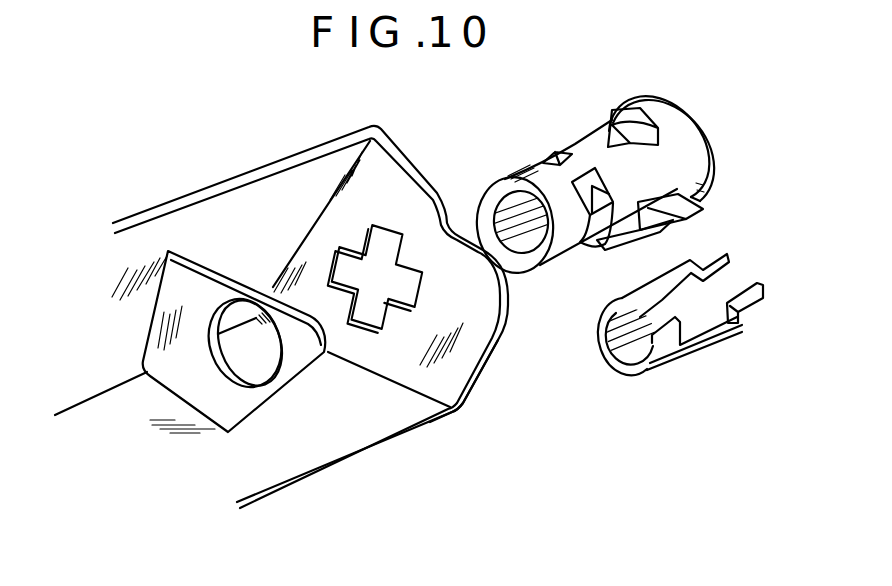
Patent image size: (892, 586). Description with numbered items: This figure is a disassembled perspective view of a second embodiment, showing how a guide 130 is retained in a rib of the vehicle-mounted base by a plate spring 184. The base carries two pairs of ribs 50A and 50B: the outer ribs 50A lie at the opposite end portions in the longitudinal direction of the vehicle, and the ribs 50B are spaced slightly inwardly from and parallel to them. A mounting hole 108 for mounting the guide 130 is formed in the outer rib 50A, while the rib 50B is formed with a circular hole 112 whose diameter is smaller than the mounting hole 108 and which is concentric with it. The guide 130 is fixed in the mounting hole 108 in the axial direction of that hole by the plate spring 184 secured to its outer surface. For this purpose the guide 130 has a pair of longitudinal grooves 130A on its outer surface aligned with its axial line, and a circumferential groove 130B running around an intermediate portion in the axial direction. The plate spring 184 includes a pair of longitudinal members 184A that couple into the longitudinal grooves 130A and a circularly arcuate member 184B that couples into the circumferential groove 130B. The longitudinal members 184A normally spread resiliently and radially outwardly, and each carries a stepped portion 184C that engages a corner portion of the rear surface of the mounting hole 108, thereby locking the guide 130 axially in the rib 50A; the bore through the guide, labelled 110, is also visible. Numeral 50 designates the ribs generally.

The rib 50 is at (168, 200).
The outer rib 50A is at (453, 380).
The inner rib 50B is at (253, 400).
The mounting hole 108 is at (357, 243).
The bore of insert 110 is at (492, 203).
The circular hole 112 is at (278, 357).
The guide 130 is at (552, 145).
The longitudinal groove 130A is at (650, 198).
The circumferential groove 130B is at (592, 200).
The plate spring 184 is at (663, 370).
The longitudinal member 184A is at (707, 353).
The circularly arcuate member 184B is at (610, 347).
The stepped portion 184C is at (747, 328).